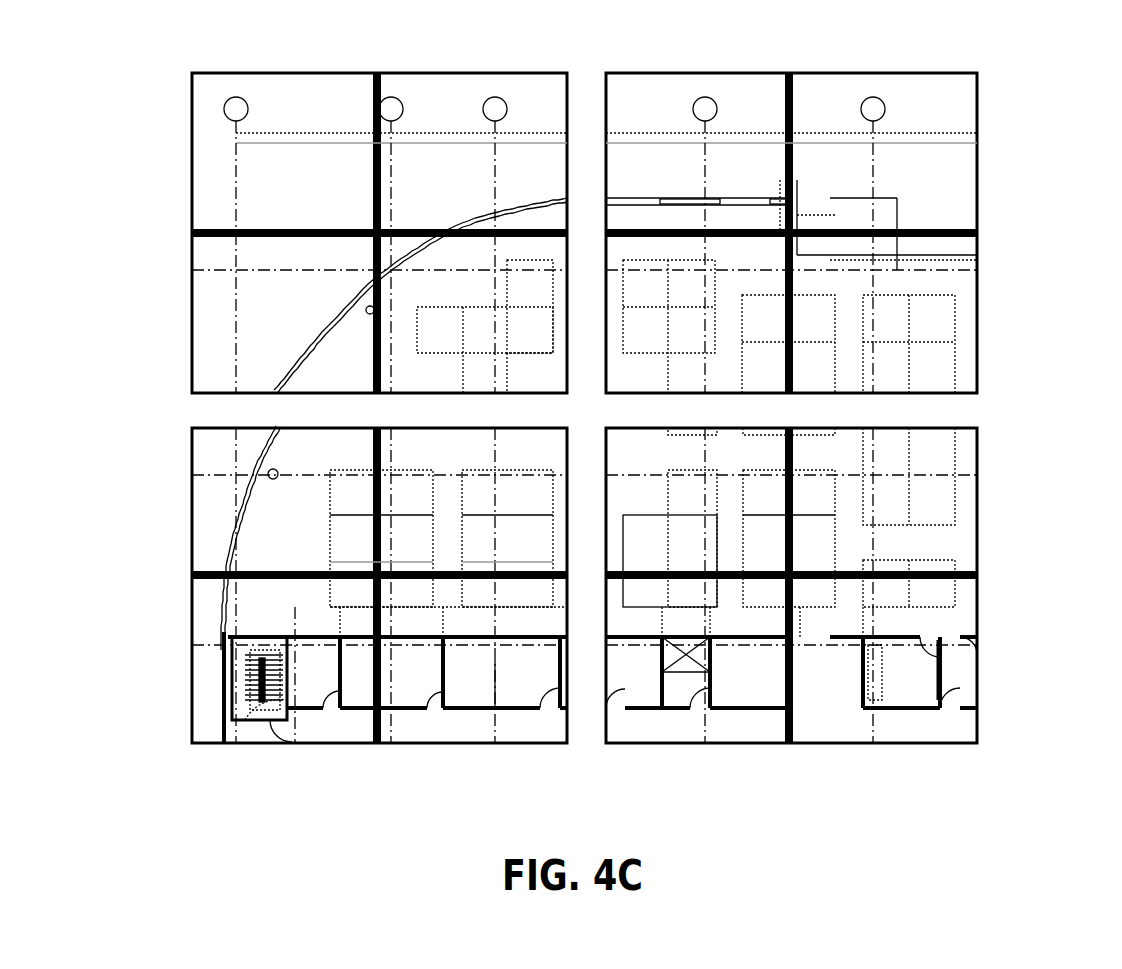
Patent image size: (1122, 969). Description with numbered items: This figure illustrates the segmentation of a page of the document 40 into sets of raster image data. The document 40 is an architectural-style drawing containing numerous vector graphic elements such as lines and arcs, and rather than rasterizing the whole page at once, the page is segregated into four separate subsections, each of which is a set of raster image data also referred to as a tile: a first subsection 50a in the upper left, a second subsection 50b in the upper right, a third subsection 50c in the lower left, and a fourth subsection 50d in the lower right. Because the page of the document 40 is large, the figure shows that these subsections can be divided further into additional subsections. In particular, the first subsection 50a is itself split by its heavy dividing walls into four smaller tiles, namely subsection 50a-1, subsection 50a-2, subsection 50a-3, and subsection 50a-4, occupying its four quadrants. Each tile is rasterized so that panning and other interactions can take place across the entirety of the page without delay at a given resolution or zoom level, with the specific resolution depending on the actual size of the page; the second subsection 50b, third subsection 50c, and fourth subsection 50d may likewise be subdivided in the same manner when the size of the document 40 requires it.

The document 40 is at (601, 429).
The first subsection 50a is at (338, 227).
The subsection of first subsection 50a-1 is at (280, 92).
The subsection of first subsection 50a-2 is at (482, 92).
The subsection of first subsection 50a-3 is at (217, 322).
The subsection of first subsection 50a-4 is at (468, 368).
The second subsection 50b is at (977, 343).
The third subsection 50c is at (192, 566).
The fourth subsection 50d is at (977, 635).